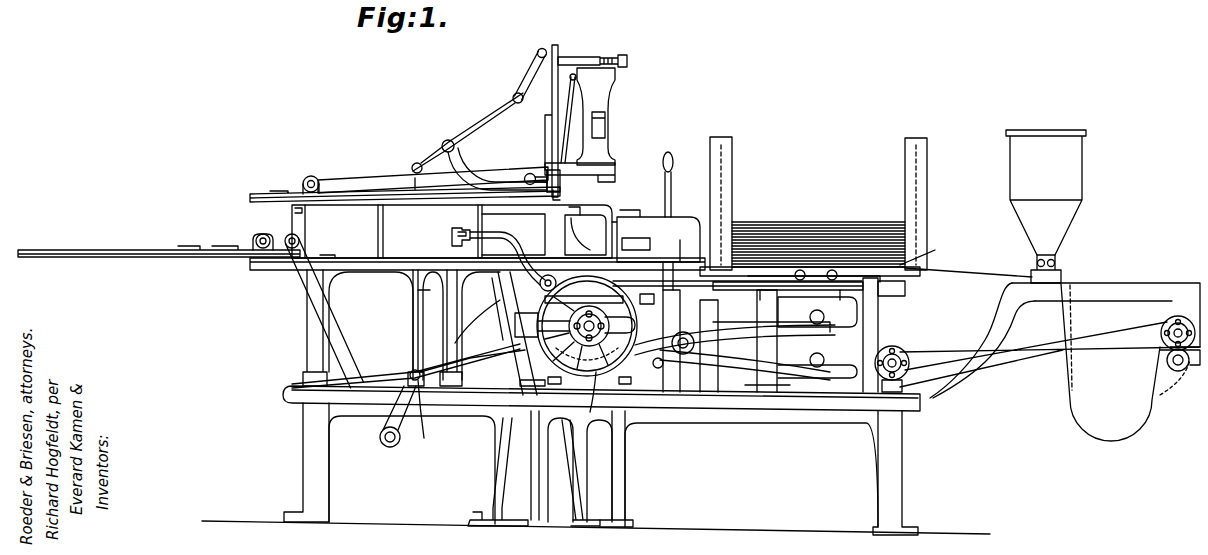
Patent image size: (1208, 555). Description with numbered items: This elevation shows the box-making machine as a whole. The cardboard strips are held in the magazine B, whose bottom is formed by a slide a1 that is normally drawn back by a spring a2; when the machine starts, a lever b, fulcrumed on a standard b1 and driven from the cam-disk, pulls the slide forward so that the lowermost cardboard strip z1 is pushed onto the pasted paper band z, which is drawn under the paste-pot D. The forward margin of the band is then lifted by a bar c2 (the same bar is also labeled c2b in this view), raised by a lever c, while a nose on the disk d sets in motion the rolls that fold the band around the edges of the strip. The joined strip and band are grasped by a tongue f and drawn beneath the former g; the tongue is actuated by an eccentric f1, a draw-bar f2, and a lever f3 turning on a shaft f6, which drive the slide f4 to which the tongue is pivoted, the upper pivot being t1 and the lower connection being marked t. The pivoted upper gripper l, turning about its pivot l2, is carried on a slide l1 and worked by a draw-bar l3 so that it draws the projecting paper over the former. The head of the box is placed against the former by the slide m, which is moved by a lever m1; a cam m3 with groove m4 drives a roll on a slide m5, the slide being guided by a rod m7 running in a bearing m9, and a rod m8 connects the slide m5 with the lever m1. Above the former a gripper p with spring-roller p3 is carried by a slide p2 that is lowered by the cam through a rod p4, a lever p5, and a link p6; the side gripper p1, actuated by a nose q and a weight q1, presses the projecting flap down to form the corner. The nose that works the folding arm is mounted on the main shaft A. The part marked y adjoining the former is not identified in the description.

The main shaft A is at (587, 326).
The magazine B is at (813, 218).
The paste-pot D is at (1046, 206).
The slide a1 is at (925, 255).
The spring a2 is at (788, 286).
The lever b is at (737, 324).
The standard b1 is at (644, 306).
The lever c is at (892, 369).
The bar c2 is at (735, 338).
The link bearing c2b is at (891, 288).
The disk d is at (745, 363).
The tongue f is at (477, 321).
The eccentric f1 is at (426, 432).
The draw-bar f2 is at (410, 375).
The lever f3 is at (355, 336).
The slide f4 is at (130, 256).
The shaft f6 is at (386, 446).
The former g is at (676, 250).
The pivoted gripper l is at (452, 231).
The slide l1 is at (513, 234).
The pivot l2 is at (309, 176).
The draw-bar l3 is at (405, 184).
The slide m is at (452, 237).
The lever m1 is at (513, 258).
The cam m3 is at (554, 336).
The groove m4 is at (593, 399).
The slide m5 is at (620, 334).
The rod m7 is at (530, 380).
The rod m8 is at (584, 293).
The link m9 is at (472, 362).
The gripper p is at (596, 116).
The gripper p1 is at (573, 118).
The slide p2 is at (592, 53).
The spring-roller p3 is at (580, 177).
The rod p4 is at (420, 300).
The lever p5 is at (482, 128).
The link p6 is at (526, 73).
The nose q is at (559, 197).
The weight q1 is at (529, 173).
The column t is at (518, 333).
The pivot t1 is at (493, 305).
The box y is at (656, 246).
The paper band z is at (967, 270).
The cardboard strip z1 is at (787, 222).